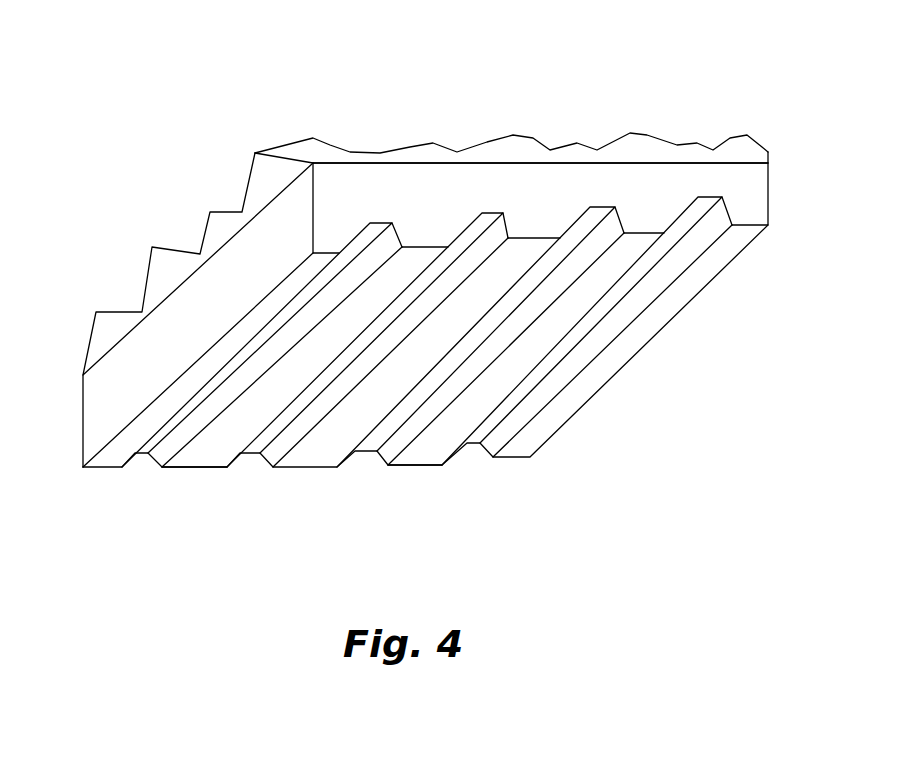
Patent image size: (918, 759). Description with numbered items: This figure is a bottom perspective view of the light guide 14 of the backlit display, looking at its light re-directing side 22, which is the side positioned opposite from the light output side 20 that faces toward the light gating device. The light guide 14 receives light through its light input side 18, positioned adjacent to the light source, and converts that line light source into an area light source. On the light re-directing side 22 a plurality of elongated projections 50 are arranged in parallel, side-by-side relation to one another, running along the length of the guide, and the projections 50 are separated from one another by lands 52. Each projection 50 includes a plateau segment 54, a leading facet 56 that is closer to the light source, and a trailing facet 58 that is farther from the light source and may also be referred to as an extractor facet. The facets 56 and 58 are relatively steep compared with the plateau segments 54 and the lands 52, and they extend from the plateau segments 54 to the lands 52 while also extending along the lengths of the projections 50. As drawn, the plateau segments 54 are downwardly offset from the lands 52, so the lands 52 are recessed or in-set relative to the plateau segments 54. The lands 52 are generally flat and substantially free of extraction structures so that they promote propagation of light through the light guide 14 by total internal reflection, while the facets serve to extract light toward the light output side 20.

The light guide 14 is at (778, 194).
The light input side 18 is at (102, 412).
The light output side 20 is at (366, 131).
The light re-directing side 22 is at (446, 544).
The elongated projection 50 is at (193, 481).
The land 52 is at (370, 222).
The plateau segment 54 is at (240, 427).
The leading facet 56 is at (403, 235).
The trailing facet 58 is at (432, 223).